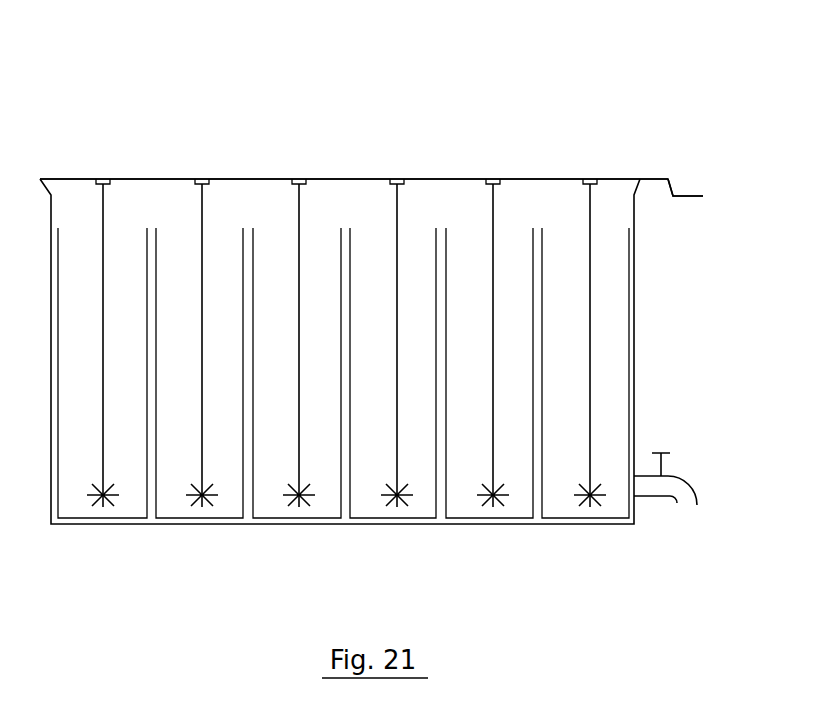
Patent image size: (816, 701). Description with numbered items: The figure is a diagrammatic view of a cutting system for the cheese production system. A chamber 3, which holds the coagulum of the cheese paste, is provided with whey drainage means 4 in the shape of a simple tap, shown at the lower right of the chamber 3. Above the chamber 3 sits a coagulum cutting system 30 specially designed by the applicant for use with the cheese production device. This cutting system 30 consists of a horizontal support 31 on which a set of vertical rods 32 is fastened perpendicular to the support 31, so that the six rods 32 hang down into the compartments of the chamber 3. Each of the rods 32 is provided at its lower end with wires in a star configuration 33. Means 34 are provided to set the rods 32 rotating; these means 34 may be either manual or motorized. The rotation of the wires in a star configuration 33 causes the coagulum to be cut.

The chamber 3 is at (638, 340).
The whey drainage means 4 is at (685, 478).
The coagulum cutting system 30 is at (484, 173).
The horizontal support 31 is at (264, 176).
The vertical rods 32 is at (105, 434).
The wires in a star configuration 33 is at (100, 508).
The means to set rods rotating 34 is at (693, 190).